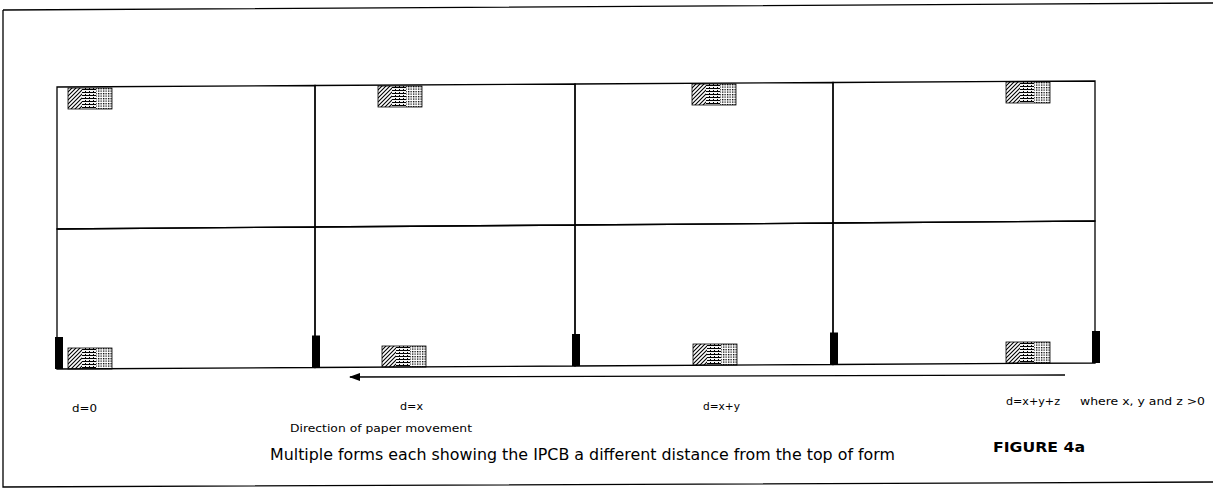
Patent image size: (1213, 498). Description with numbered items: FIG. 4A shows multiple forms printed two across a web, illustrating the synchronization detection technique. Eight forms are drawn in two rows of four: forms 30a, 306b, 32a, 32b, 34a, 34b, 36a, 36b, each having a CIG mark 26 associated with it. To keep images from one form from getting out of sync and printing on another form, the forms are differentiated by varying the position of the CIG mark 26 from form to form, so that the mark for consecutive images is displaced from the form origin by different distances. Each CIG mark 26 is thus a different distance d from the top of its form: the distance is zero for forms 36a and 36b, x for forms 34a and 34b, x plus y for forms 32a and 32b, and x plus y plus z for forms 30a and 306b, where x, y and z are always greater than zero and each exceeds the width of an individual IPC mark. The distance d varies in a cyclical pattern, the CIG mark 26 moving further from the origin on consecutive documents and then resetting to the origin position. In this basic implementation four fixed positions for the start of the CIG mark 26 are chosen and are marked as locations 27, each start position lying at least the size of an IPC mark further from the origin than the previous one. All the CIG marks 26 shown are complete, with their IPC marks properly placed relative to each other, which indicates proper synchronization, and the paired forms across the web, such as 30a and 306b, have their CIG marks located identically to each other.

The CIG mark 26 is at (98, 85).
The locations 27 is at (103, 382).
The form 30a is at (163, 150).
The Form 1B 306b is at (185, 248).
The form 32a is at (420, 148).
The form 32b is at (443, 247).
The form 34a is at (660, 147).
The form 34b is at (682, 248).
The form 36a is at (918, 152).
The form 36b is at (941, 250).